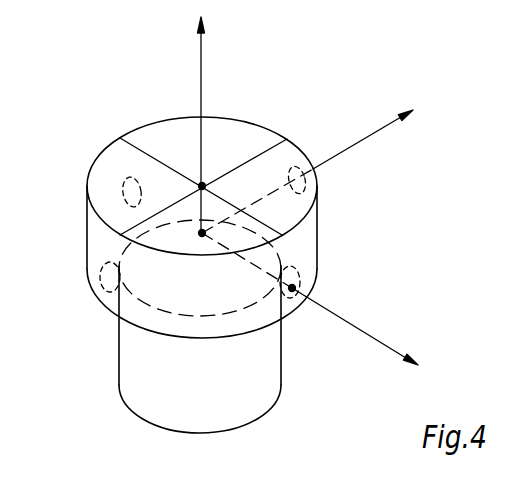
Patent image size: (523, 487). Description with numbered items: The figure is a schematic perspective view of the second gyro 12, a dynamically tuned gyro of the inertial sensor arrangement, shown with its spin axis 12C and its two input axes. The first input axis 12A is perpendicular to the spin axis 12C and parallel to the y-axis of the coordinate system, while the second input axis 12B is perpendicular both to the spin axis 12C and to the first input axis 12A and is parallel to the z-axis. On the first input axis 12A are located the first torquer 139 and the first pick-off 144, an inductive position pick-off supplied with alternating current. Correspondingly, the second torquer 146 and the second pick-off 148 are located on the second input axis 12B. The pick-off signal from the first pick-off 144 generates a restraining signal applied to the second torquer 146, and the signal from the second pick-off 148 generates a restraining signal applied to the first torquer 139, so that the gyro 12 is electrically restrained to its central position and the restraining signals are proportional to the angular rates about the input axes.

The second gyro 12 is at (257, 362).
The first input axis 12A is at (370, 335).
The second input axis 12B is at (382, 130).
The spin axis 12C is at (201, 78).
The first torquer 139 is at (127, 177).
The first pick-off 144 is at (300, 270).
The second torquer 146 is at (102, 267).
The second pick-off 148 is at (297, 167).